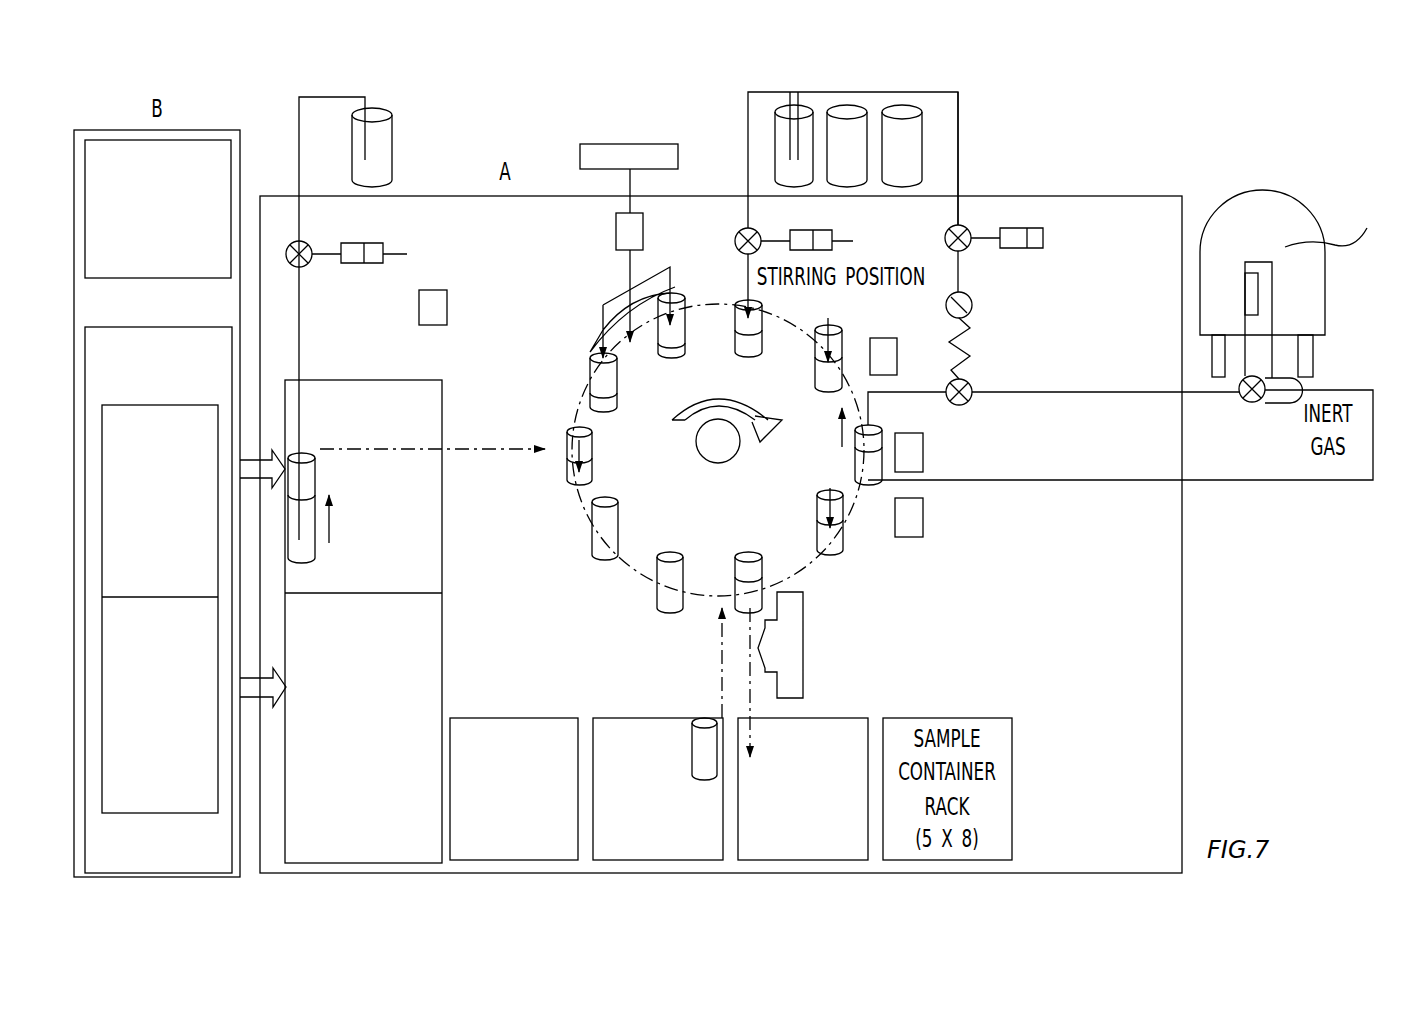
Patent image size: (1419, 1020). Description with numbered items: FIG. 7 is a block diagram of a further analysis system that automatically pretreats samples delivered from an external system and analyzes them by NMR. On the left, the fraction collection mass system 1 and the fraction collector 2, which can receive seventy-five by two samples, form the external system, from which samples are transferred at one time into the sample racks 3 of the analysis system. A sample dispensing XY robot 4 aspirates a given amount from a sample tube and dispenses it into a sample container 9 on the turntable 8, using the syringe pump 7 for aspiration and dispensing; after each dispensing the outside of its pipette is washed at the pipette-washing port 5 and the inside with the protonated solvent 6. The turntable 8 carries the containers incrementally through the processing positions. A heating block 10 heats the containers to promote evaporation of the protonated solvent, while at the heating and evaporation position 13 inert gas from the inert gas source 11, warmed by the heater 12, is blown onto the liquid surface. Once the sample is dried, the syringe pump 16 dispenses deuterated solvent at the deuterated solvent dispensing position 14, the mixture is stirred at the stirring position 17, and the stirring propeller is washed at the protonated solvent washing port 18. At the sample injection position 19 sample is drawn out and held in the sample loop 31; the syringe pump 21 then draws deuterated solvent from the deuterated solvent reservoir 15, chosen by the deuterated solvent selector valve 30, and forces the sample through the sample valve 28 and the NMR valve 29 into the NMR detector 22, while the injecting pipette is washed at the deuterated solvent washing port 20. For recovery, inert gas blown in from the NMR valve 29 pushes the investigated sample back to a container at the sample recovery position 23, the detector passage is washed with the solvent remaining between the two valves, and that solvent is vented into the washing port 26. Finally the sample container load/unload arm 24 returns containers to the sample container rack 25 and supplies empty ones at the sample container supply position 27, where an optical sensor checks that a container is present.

The fraction collection mass system 1 is at (158, 209).
The fraction collector 2 is at (158, 600).
The sample rack 3 is at (363, 621).
The sample dispensing XY robot 4 is at (549, 556).
The pipette-washing port 5 is at (443, 369).
The protonated solvent 6 is at (393, 153).
The syringe pump 7 is at (422, 236).
The turntable 8 is at (718, 458).
The sample container 9 is at (627, 461).
The heating block 10 is at (605, 340).
The inert gas source 11 is at (640, 143).
The heater 12 is at (616, 240).
The heating and evaporation position 13 is at (618, 382).
The deuterated solvent dispensing position 14 is at (734, 334).
The deuterated solvent reservoir 15 is at (860, 140).
The syringe pump 16 is at (829, 260).
The stirring position 17 is at (814, 355).
The protonated solvent washing port 18 is at (890, 338).
The sample injection position 19 is at (854, 446).
The deuterated solvent washing port 20 is at (980, 451).
The syringe pump 21 is at (1029, 158).
The NMR detector 22 is at (1309, 269).
The sample recovery position 23 is at (868, 482).
The sample container load/unload arm 24 is at (803, 620).
The sample container rack 25 is at (514, 789).
The washing port 26 is at (998, 517).
The sample container supply position 27 is at (651, 614).
The sample valve 28 is at (1053, 402).
The NMR valve 29 is at (1252, 447).
The deuterated solvent selector valve 30 is at (1043, 238).
The sample loop 31 is at (1042, 335).